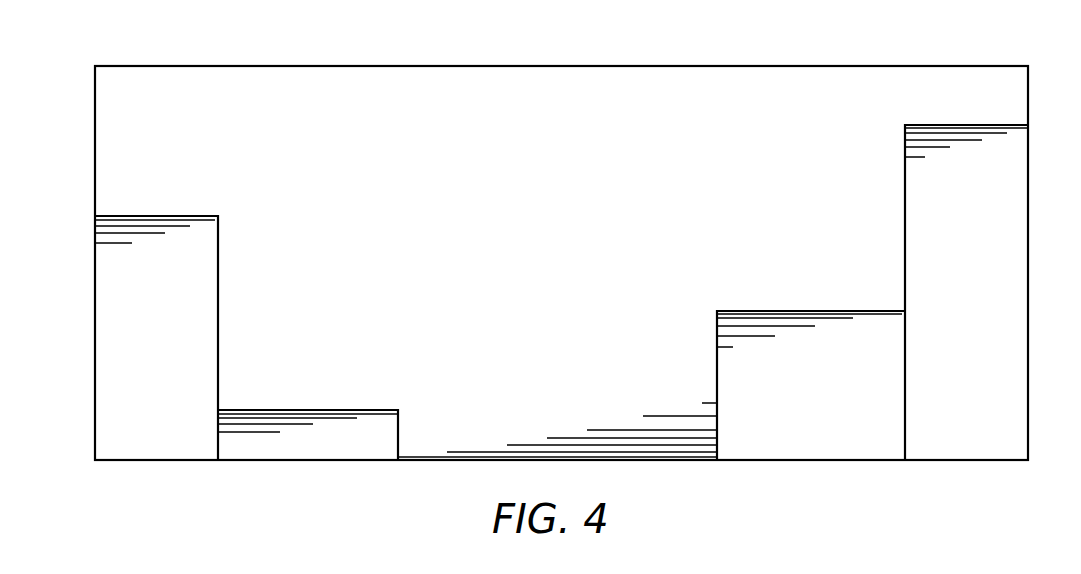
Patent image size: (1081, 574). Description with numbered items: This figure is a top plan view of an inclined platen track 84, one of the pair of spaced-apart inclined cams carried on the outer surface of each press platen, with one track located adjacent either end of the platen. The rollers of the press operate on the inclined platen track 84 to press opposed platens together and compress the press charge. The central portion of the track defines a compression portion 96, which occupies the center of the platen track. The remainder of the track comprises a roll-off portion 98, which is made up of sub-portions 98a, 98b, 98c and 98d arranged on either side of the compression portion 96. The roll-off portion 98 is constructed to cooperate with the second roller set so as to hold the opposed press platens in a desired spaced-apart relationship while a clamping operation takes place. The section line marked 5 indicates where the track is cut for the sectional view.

The inclined platen track 84 is at (749, 66).
The compression portion 96 is at (470, 462).
The roll-off portion 98 is at (265, 462).
The sub-portion 98a is at (958, 435).
The sub-portion 98b is at (315, 438).
The sub-portion 98c is at (783, 433).
The sub-portion 98d is at (162, 433).
The section line 5- 5 is at (117, 479).